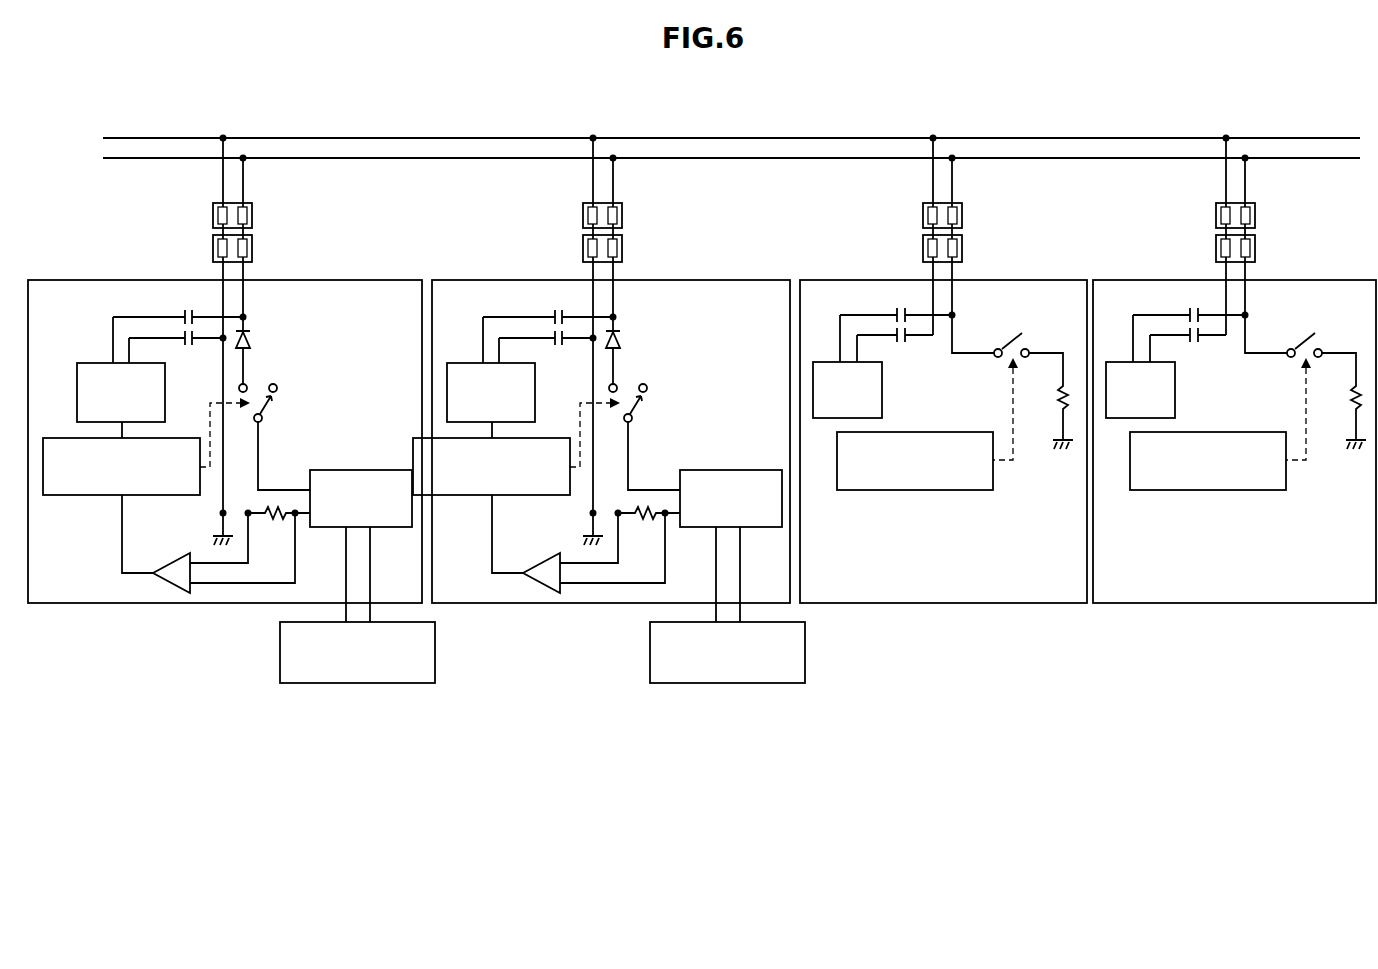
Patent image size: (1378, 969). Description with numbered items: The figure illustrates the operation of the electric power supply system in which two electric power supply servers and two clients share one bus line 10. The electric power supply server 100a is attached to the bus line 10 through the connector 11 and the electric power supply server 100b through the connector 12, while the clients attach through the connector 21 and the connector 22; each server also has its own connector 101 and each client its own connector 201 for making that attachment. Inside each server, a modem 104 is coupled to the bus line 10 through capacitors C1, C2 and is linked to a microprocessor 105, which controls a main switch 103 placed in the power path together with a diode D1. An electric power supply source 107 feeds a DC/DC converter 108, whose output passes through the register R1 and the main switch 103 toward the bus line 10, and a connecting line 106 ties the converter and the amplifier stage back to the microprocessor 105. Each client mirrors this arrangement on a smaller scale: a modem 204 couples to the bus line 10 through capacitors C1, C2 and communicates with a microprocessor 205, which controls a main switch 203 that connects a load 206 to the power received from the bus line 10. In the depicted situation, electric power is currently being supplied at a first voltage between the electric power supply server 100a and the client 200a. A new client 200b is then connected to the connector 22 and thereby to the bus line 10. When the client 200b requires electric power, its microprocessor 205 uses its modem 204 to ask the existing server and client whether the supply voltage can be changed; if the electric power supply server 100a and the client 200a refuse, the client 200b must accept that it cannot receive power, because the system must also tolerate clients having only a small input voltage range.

The bus line 10 is at (96, 128).
The connector 11 is at (253, 213).
The connector 12 is at (623, 213).
The connector 21 is at (963, 213).
The connector 22 is at (1256, 213).
The connector 101 is at (253, 245).
The connector 201 is at (963, 245).
The electric power supply server 100a is at (358, 253).
The electric power supply server 100b is at (728, 253).
The client 200a is at (1041, 253).
The client 200b is at (1334, 253).
The main switch 103 is at (264, 407).
The modem 104 is at (92, 361).
The microprocessor 105 is at (93, 498).
The connecting line 106 is at (185, 555).
The electric power supply source 107 is at (378, 684).
The DC/DC converter 108 is at (373, 470).
The main switch 203 is at (1009, 340).
The modem 204 is at (883, 391).
The microprocessor 205 is at (935, 491).
The load 206 is at (1057, 406).
The capacitor C1 is at (679, 324).
The capacitor C2 is at (677, 349).
The diode D1 is at (445, 339).
The register R1 is at (464, 526).